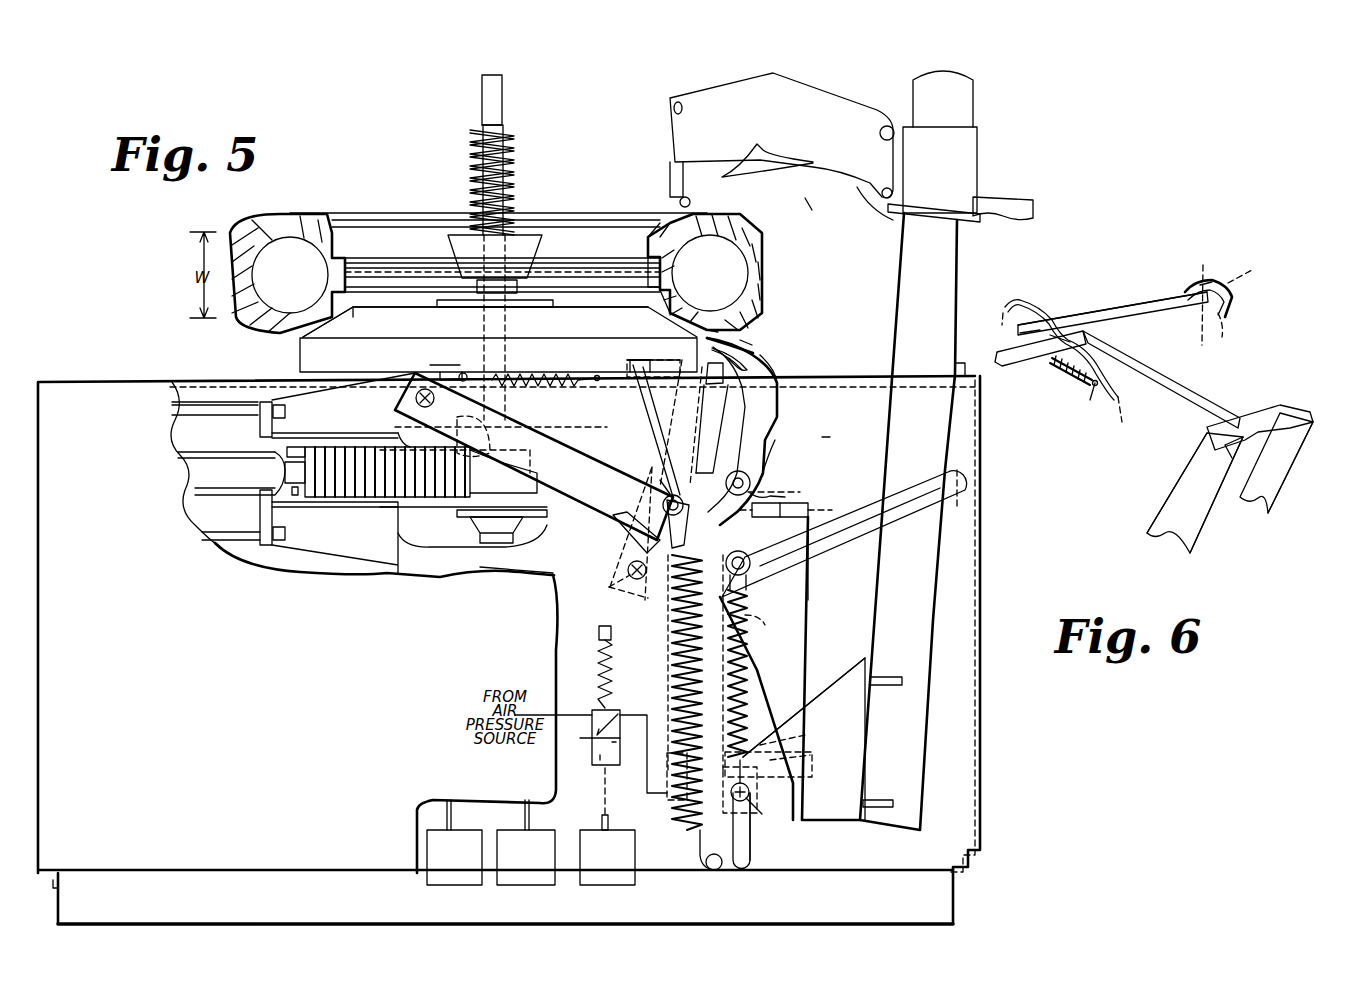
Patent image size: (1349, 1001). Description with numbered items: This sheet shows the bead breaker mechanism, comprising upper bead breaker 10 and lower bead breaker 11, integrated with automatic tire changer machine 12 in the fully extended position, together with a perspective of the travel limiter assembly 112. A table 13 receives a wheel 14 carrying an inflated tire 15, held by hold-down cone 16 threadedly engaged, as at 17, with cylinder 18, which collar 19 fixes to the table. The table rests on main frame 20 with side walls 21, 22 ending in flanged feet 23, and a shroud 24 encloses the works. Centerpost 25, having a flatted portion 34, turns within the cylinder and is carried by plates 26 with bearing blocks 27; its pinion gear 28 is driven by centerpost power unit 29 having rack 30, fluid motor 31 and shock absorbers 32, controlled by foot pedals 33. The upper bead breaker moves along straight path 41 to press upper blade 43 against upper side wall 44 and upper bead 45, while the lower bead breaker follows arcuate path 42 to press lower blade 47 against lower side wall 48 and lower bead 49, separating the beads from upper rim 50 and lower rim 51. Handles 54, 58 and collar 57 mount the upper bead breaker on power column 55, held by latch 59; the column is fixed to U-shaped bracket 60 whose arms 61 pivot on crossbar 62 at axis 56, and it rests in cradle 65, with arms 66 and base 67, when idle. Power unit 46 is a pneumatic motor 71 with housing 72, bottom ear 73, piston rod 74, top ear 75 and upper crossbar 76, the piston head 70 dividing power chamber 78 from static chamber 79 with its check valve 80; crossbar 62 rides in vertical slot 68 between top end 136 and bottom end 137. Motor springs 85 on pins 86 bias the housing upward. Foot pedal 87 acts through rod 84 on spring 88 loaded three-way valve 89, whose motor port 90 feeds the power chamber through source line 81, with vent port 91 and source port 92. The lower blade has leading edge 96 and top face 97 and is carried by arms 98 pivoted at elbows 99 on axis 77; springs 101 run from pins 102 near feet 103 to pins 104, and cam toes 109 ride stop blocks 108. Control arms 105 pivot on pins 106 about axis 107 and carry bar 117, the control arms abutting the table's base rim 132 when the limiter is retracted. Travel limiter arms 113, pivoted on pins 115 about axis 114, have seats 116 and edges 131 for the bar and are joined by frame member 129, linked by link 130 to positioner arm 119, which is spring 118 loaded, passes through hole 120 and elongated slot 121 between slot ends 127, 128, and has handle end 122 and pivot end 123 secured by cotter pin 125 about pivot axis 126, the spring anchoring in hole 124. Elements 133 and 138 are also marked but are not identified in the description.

In FIG. 5, the upper bead breaker 10 is at (804, 206).
In FIG. 5, the lower bead breaker 11 is at (830, 433).
In FIG. 5, the automatic tire changer machine 12 is at (110, 326).
In FIG. 5, the table 13 is at (310, 344).
In FIG. 5, the wheel 14 is at (402, 233).
In FIG. 5, the pneumatic tire 15 is at (246, 232).
In FIG. 5, the hold-down cone 16 is at (462, 247).
In FIG. 5, the exterior threads 17 is at (513, 145).
In FIG. 5, the cylinder 18 is at (515, 170).
In FIG. 5, the collar 19 is at (480, 305).
In FIG. 5, the main frame 20 is at (449, 576).
In FIG. 5, the side wall 21 is at (512, 570).
In FIG. 6, the side wall 21 is at (1028, 305).
In FIG. 6, the side wall 22 is at (1203, 283).
In FIG. 5, the flanged feet 23 is at (950, 918).
In FIG. 5, the shroud 24 is at (994, 457).
In FIG. 5, the centerpost 25 is at (504, 77).
In FIG. 5, the plates 26 is at (336, 427).
In FIG. 5, the bearing block 27 is at (478, 424).
In FIG. 5, the pinion gear 28 is at (540, 482).
In FIG. 5, the centerpost power unit 29 is at (198, 514).
In FIG. 5, the straight rack 30 is at (367, 488).
In FIG. 5, the fluid motor 31 is at (185, 441).
In FIG. 5, the shock absorbers 32 is at (198, 470).
In FIG. 5, the foot pedals 33 is at (520, 888).
In FIG. 5, the flatted portion 34 is at (485, 96).
In FIG. 5, the travel path 41 is at (668, 175).
In FIG. 5, the travel path 42 is at (784, 436).
In FIG. 5, the upper blade 43 is at (735, 181).
In FIG. 5, the upper side wall 44 is at (700, 226).
In FIG. 5, the upper bead 45 is at (668, 243).
In FIG. 5, the bead breaker power unit 46 is at (816, 614).
In FIG. 5, the lower blade 47 is at (745, 342).
In FIG. 5, the lower side wall 48 is at (714, 328).
In FIG. 5, the lower bead 49 is at (676, 306).
In FIG. 5, the upper rim 50 is at (660, 234).
In FIG. 5, the lower rim 51 is at (662, 312).
In FIG. 5, the handle 54 is at (683, 100).
In FIG. 5, the power column 55 is at (937, 585).
In FIG. 5, the pivot axis 56 is at (762, 814).
In FIG. 5, the collar 57 is at (978, 156).
In FIG. 5, the handle 58 is at (1035, 210).
In FIG. 5, the latch 59 is at (978, 222).
In FIG. 5, the U-shaped bracket 60 is at (878, 721).
In FIG. 5, the bracket arms 61 is at (860, 755).
In FIG. 5, the crossbar 62 is at (750, 790).
In FIG. 5, the cradle 65 is at (897, 476).
In FIG. 5, the cradle arms 66 is at (895, 515).
In FIG. 5, the cradle base 67 is at (960, 504).
In FIG. 5, the vertical slot 68 is at (748, 850).
In FIG. 5, the piston head 70 is at (805, 735).
In FIG. 5, the pneumatic motor 71 is at (814, 649).
In FIG. 5, the housing 72 is at (808, 593).
In FIG. 5, the ear 73 is at (760, 801).
In FIG. 5, the piston rod 74 is at (765, 625).
In FIG. 5, the ear 75 is at (765, 490).
In FIG. 5, the crossbar 76 is at (740, 471).
In FIG. 5, the pivot axis 77 is at (770, 496).
In FIG. 5, the power chamber 78 is at (812, 760).
In FIG. 5, the static chamber 79 is at (795, 700).
In FIG. 5, the check valve 80 is at (815, 508).
In FIG. 5, the source line 81 is at (640, 805).
In FIG. 5, the rod 84 is at (603, 816).
In FIG. 5, the motor springs 85 is at (759, 673).
In FIG. 5, the pin 86 is at (751, 565).
In FIG. 5, the foot pedal 87 is at (636, 885).
In FIG. 5, the spring 88 is at (604, 684).
In FIG. 5, the three-way valve 89 is at (616, 712).
In FIG. 5, the motor port 90 is at (622, 716).
In FIG. 5, the vent port 91 is at (597, 740).
In FIG. 5, the source port 92 is at (590, 716).
In FIG. 5, the leading edge 96 is at (745, 335).
In FIG. 5, the top face 97 is at (770, 336).
In FIG. 5, the arm 98 is at (785, 392).
In FIG. 5, the elbow 99 is at (770, 472).
In FIG. 5, the spring 101 is at (672, 637).
In FIG. 5, the pin 102 is at (672, 480).
In FIG. 5, the foot 103 is at (666, 494).
In FIG. 5, the pin 104 is at (712, 872).
In FIG. 5, the control arm 105 is at (578, 490).
In FIG. 5, the pin 106 is at (416, 398).
In FIG. 5, the pivot axis 107 is at (400, 422).
In FIG. 5, the stop block 108 is at (652, 553).
In FIG. 5, the cam toe 109 is at (632, 520).
In FIG. 5, the travel limiter assembly 112 is at (652, 406).
In FIG. 6, the travel limiter assembly 112 is at (1092, 503).
In FIG. 5, the travel limiter arm 113 is at (672, 420).
In FIG. 6, the travel limiter arm 113 is at (1262, 500).
In FIG. 5, the pivot axis 114 is at (642, 592).
In FIG. 5, the pin 115 is at (612, 587).
In FIG. 5, the seat 116 is at (719, 388).
In FIG. 6, the seat 116 is at (1235, 455).
In FIG. 5, the bar 117 is at (708, 468).
In FIG. 5, the spring 118 is at (534, 386).
In FIG. 6, the spring 118 is at (1063, 373).
In FIG. 5, the positioner arm 119 is at (460, 370).
In FIG. 6, the positioner arm 119 is at (1127, 316).
In FIG. 6, the hole 120 is at (1182, 296).
In FIG. 5, the elongated slot 121 is at (455, 380).
In FIG. 6, the elongated slot 121 is at (1037, 330).
In FIG. 6, the handle end 122 is at (1002, 366).
In FIG. 6, the pivot end 123 is at (1224, 336).
In FIG. 5, the hole 124 is at (599, 381).
In FIG. 6, the hole 124 is at (1093, 386).
In FIG. 6, the cotter pin 125 is at (1240, 276).
In FIG. 6, the pivot axis 126 is at (1212, 243).
In FIG. 5, the slot end 127 is at (488, 380).
In FIG. 6, the slot end 127 is at (1062, 338).
In FIG. 5, the slot end 128 is at (440, 360).
In FIG. 6, the slot end 128 is at (1012, 329).
In FIG. 5, the frame member 129 is at (678, 422).
In FIG. 6, the frame member 129 is at (1258, 418).
In FIG. 5, the link 130 is at (648, 372).
In FIG. 6, the link 130 is at (1180, 385).
In FIG. 5, the edge 131 is at (733, 420).
In FIG. 6, the edge 131 is at (1272, 498).
In FIG. 5, the base rim 132 is at (650, 362).
In FIG. 5, the link 133 is at (642, 466).
In FIG. 5, the top end 136 is at (745, 777).
In FIG. 5, the bottom end 137 is at (742, 870).
In FIG. 5, the rim groove 138 is at (650, 270).